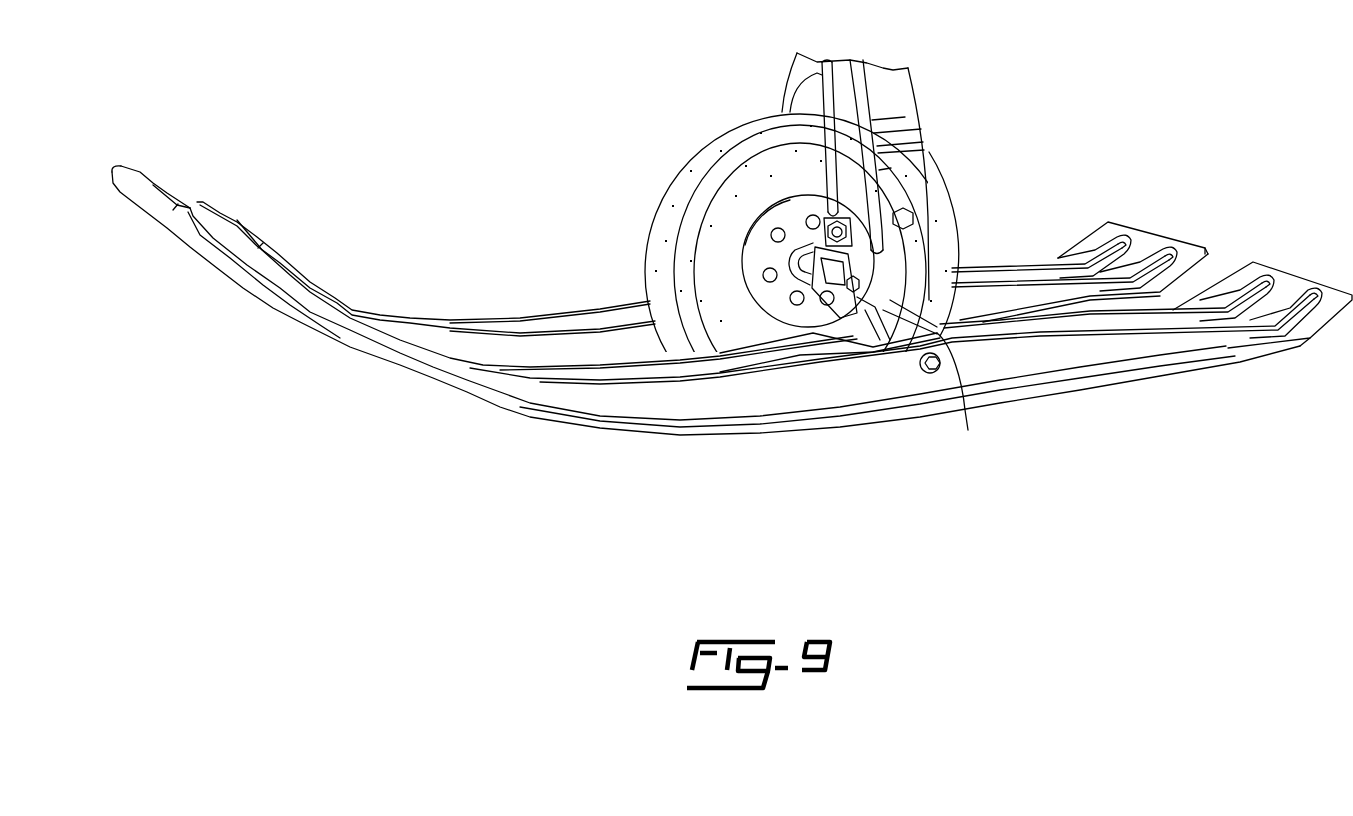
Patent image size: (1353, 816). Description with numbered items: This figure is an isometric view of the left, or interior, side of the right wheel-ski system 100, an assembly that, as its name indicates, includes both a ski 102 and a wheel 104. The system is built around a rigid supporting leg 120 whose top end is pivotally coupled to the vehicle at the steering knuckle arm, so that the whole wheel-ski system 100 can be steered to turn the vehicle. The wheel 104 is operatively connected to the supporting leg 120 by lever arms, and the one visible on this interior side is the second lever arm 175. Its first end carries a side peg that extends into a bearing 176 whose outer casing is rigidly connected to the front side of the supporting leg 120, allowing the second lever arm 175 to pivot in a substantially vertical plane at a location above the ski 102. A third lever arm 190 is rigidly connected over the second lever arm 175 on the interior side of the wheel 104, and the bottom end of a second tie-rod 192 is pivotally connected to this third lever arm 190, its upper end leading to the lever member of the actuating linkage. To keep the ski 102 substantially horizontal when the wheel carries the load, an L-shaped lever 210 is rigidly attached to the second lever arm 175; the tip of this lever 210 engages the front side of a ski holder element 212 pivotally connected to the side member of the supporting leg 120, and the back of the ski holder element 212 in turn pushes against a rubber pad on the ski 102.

The wheel-ski system 100 is at (545, 94).
The ski 102 is at (348, 389).
The wheel 104 is at (660, 228).
The supporting leg 120 is at (892, 95).
The second lever arm 175 is at (845, 262).
The bearing 176 is at (858, 252).
The third lever arm 190 is at (848, 240).
The second tie-rod 192 is at (827, 100).
The L-shaped lever 210 is at (873, 348).
The ski holder element 212 is at (940, 366).